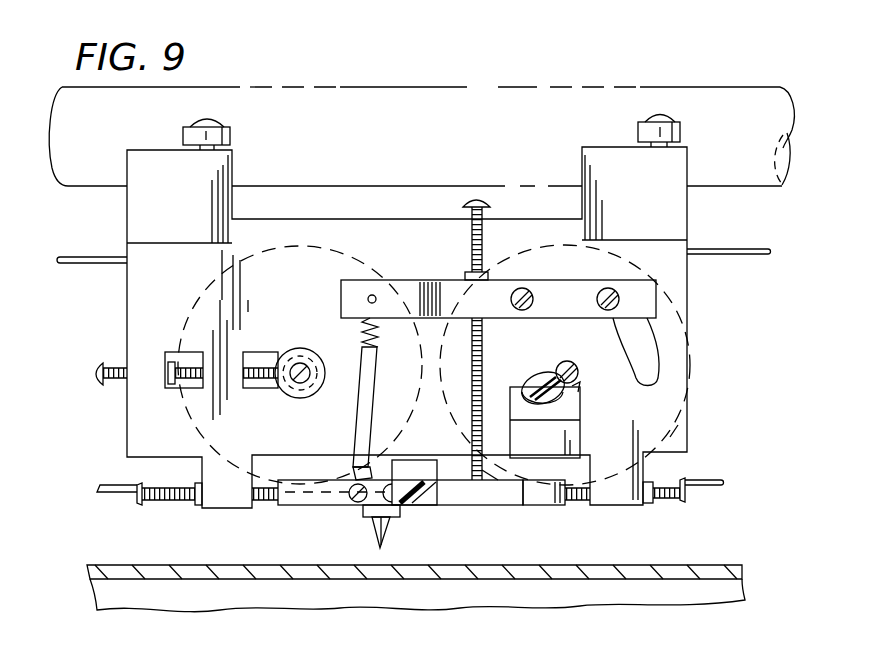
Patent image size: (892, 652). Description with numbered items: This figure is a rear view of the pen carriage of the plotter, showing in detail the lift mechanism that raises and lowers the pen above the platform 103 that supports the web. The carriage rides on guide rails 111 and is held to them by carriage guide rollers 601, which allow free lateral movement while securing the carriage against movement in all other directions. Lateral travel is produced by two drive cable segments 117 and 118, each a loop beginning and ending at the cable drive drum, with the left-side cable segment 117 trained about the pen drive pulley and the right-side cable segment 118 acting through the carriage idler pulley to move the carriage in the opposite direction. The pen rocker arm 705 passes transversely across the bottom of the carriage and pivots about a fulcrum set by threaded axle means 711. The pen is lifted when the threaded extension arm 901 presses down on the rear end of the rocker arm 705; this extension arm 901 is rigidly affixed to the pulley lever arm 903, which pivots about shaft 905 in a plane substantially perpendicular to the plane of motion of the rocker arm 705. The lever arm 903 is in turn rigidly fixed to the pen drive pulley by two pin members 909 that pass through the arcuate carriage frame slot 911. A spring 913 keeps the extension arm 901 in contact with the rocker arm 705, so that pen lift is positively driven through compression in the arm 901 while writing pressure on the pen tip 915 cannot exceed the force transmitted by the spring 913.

The platform 103 is at (683, 565).
The guide rails 111 is at (478, 92).
The cable segment 117 is at (730, 253).
The cable segment 118 is at (90, 252).
The carriage guide rollers 601 is at (230, 135).
The pen rocker arm 705 is at (340, 510).
The threaded axle means 711 is at (138, 500).
The threaded extension arm 901 is at (472, 252).
The pulley lever arm 903 is at (640, 302).
The shaft 905 is at (582, 409).
The pin members 909 is at (597, 298).
The arcuate carriage frame slot 911 is at (650, 358).
The spring 913 is at (363, 335).
The pen tip 915 is at (390, 530).